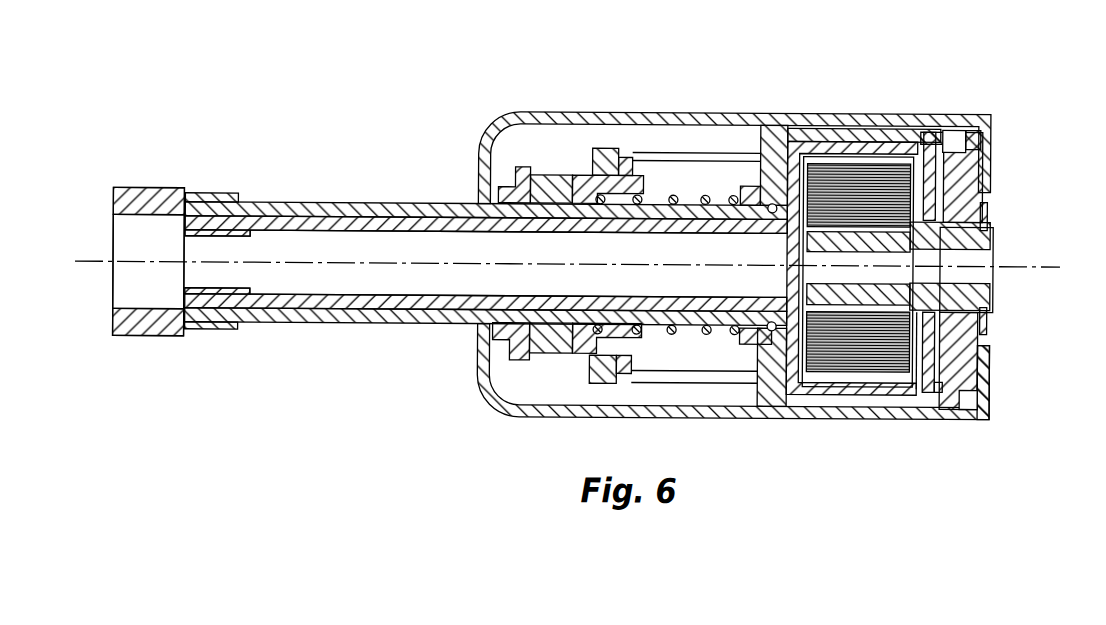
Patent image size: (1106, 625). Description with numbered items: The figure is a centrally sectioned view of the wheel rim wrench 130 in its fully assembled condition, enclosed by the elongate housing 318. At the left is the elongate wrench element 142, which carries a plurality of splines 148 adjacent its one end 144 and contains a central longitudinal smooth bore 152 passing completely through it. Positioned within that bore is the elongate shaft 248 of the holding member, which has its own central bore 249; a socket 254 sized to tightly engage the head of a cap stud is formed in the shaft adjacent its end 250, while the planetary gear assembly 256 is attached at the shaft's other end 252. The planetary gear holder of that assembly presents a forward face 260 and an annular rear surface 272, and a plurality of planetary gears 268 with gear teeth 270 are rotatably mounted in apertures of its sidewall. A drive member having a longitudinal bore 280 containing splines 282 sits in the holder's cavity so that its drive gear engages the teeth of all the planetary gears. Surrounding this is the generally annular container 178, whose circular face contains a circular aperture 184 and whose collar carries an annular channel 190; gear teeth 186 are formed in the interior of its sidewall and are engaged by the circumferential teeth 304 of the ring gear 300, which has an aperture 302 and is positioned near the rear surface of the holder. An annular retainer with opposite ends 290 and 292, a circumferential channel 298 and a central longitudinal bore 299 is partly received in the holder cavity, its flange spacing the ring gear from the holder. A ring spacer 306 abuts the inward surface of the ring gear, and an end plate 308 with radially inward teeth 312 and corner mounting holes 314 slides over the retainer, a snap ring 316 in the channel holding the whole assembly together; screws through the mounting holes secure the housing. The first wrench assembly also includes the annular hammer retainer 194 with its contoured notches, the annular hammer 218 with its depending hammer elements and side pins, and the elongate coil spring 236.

The wheel rim wrench 130 is at (478, 131).
The elongate wrench element 142 is at (343, 312).
The end of wrench element 144 is at (186, 203).
The splines 148 is at (223, 322).
The smooth bore 152 is at (331, 215).
The annular-shaped container 178 is at (842, 402).
The circular aperture 184 is at (1039, 6).
The gear teeth 186 is at (876, 134).
The annular channel 190 is at (746, 386).
The hammer retainer 194 is at (592, 162).
The hammer 218 is at (591, 362).
The coil spring 236 is at (672, 336).
The elongate shaft 248 is at (460, 306).
The central bore 249 is at (288, 276).
The end of shaft 250 is at (186, 293).
The other end of shaft 252 is at (796, 233).
The socket 254 is at (244, 241).
The planetary gear assembly 256 is at (960, 170).
The forward face 260 is at (772, 174).
The planetary gears 268 is at (828, 176).
The gear teeth of planetary gears 270 is at (851, 190).
The annular rear surface 272 is at (922, 146).
The longitudinal bore 280 is at (822, 277).
The splines 282 is at (976, 276).
The end of annular retainer 290 is at (930, 185).
The other end of annular retainer 292 is at (968, 241).
The circumferential channel 298 is at (972, 225).
The central longitudinal bore 299 is at (1062, 264).
The ring gear 300 is at (916, 367).
The aperture 302 is at (976, 206).
The circumferential teeth 304 is at (958, 135).
The ring spacer 306 is at (937, 389).
The end plate 308 is at (976, 375).
The teeth 312 is at (980, 297).
The mounting holes 314 is at (975, 138).
The snap ring 316 is at (986, 324).
The housing 318 is at (661, 111).